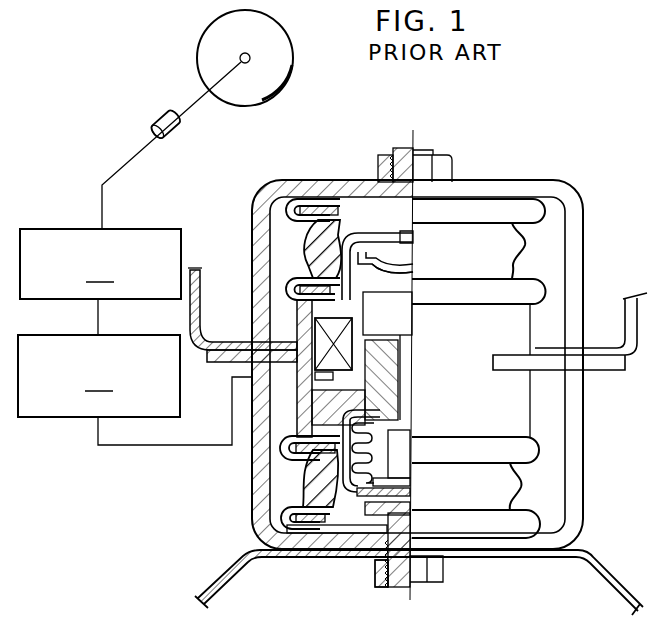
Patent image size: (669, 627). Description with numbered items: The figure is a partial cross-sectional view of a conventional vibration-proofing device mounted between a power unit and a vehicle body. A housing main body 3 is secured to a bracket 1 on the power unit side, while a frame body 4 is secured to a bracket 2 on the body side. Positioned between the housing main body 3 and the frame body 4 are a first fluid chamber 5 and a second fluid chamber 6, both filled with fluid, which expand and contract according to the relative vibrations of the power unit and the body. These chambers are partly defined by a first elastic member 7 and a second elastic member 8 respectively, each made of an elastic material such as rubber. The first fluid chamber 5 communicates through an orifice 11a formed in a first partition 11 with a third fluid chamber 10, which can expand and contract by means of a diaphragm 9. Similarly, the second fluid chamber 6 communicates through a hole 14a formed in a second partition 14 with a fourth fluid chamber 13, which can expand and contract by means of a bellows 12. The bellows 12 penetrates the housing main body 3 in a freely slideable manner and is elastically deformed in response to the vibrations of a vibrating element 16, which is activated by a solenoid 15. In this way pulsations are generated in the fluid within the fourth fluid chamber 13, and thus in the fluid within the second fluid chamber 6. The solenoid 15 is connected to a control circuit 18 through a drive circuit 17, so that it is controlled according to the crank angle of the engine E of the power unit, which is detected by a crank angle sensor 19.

The bracket on the power unit side 1 is at (638, 323).
The bracket on the body side 2 is at (605, 574).
The housing main body 3 is at (297, 312).
The frame body 4 is at (583, 501).
The first fluid chamber 5 is at (348, 200).
The second fluid chamber 6 is at (340, 470).
The first elastic member 7 is at (320, 199).
The second elastic member 8 is at (315, 493).
The diaphragm 9 is at (410, 263).
The third fluid chamber 10 is at (413, 256).
The first partition 11 is at (383, 237).
The orifice 11a is at (411, 238).
The bellows 12 is at (368, 437).
The fourth fluid chamber 13 is at (318, 472).
The second partition 14 is at (396, 492).
The hole 14a is at (350, 500).
The solenoid 15 is at (320, 337).
The vibrating element 16 is at (403, 357).
The drive circuit 17 is at (99, 376).
The control circuit 18 is at (100, 264).
The crank angle sensor 19 is at (162, 124).
The engine E is at (200, 45).